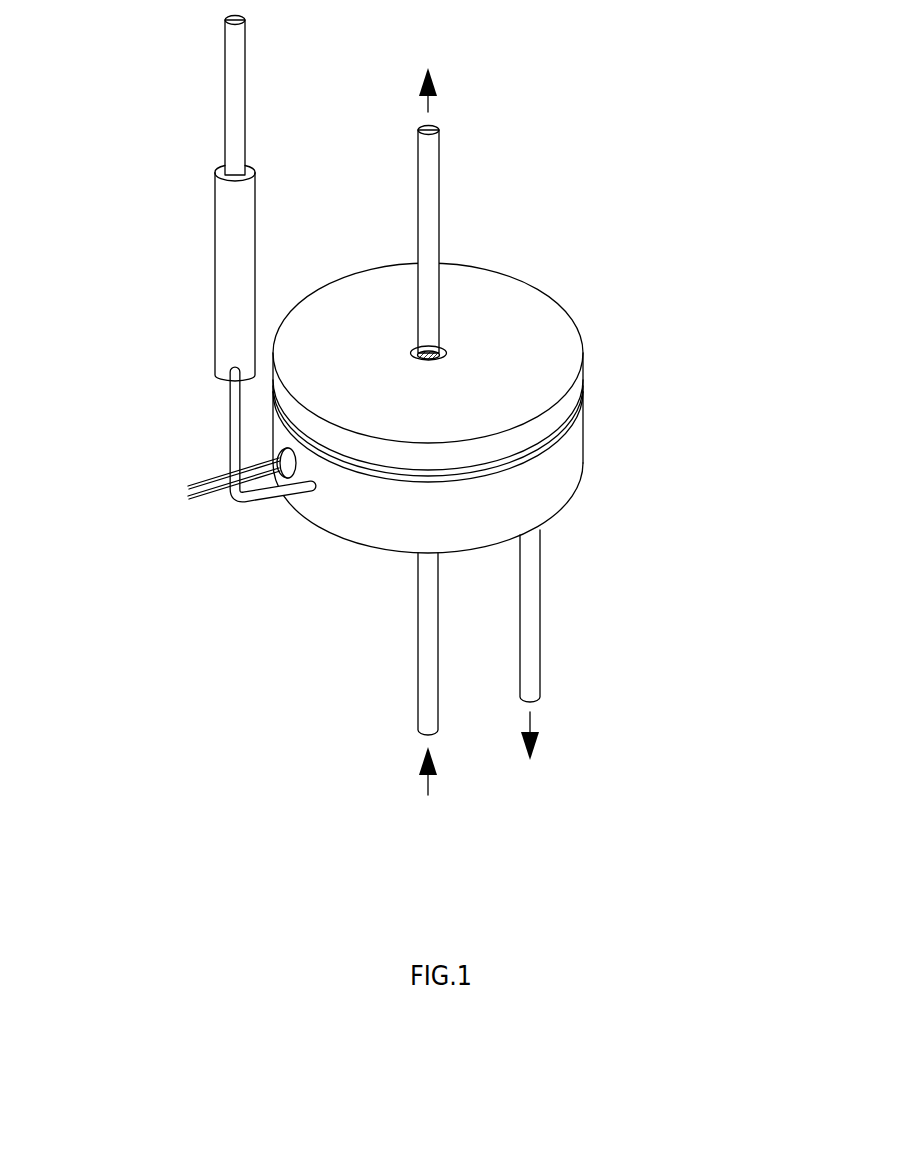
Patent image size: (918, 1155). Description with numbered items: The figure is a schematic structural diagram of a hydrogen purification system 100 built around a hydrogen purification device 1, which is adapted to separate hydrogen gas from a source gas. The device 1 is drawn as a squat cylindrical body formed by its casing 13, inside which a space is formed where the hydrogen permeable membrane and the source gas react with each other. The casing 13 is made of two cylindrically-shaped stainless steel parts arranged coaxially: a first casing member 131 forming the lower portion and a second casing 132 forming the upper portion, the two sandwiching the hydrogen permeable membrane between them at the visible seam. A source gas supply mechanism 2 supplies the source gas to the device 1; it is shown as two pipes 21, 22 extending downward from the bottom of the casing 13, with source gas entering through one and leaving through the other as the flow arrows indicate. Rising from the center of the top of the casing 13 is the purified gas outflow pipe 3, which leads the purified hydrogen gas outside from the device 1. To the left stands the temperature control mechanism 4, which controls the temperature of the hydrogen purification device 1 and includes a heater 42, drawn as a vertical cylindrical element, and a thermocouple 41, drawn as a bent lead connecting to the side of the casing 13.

The hydrogen purification system 100 is at (137, 109).
The hydrogen purification device 1 is at (594, 238).
The casing 13 is at (717, 447).
The second casing 132 is at (583, 370).
The first casing member 131 is at (583, 463).
The purified gas outflow pipe 3 is at (439, 227).
The source gas supply mechanism 2 is at (645, 606).
The source gas inlet pipe 21 is at (418, 670).
The source gas outlet pipe 22 is at (542, 672).
The temperature control mechanism 4 is at (154, 402).
The thermocouple 41 is at (212, 497).
The heater 42 is at (215, 275).